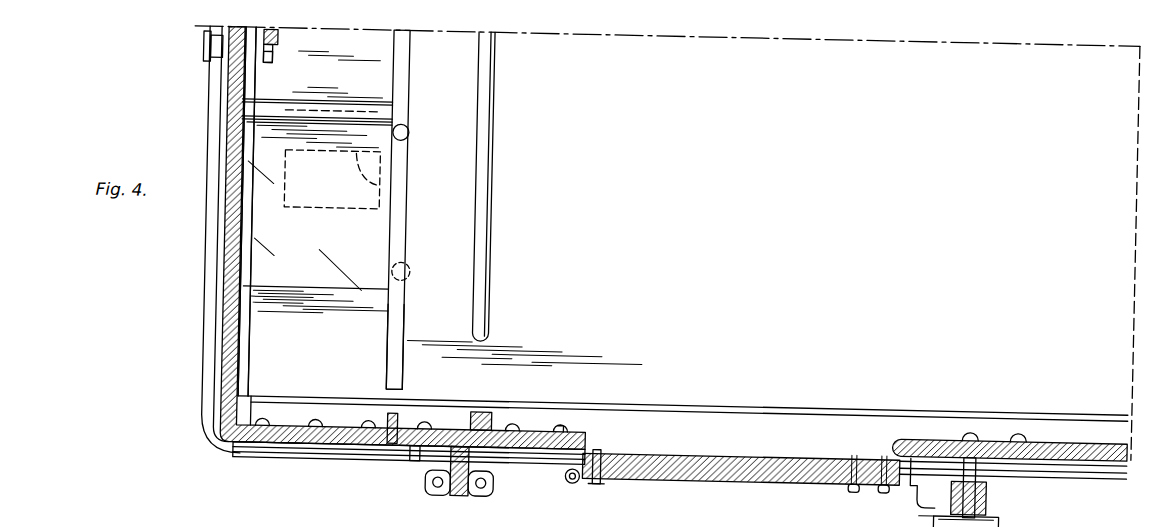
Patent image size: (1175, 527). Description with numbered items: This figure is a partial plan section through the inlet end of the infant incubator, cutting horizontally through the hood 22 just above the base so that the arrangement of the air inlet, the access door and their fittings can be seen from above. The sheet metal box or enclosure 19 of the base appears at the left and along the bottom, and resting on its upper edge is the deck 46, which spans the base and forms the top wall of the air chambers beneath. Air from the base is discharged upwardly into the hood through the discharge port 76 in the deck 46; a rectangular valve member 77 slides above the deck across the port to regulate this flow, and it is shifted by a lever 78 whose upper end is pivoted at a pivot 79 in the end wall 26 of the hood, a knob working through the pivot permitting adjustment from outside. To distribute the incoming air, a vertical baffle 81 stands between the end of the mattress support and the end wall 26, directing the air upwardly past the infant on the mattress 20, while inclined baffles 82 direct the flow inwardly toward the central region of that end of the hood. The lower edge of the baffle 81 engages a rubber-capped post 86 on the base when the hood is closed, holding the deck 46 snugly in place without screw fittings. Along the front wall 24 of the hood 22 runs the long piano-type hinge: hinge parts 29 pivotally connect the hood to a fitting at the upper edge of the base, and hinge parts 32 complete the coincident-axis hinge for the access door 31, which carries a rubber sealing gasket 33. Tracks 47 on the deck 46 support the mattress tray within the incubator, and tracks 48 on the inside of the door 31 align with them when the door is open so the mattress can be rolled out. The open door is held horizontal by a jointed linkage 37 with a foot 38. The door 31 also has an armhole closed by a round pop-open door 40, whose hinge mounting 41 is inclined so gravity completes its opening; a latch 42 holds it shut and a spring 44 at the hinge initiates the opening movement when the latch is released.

The box or enclosure 19 is at (203, 357).
The mattress 20 is at (372, 523).
The hood 22 is at (226, 288).
The front wall 24 is at (278, 435).
The end wall 26 is at (240, 231).
The hinge parts 29 is at (324, 459).
The access door 31 is at (1080, 436).
The hinge parts 32 is at (1018, 442).
The rubber sealing gasket 33 is at (420, 442).
The jointed linkage 37 is at (464, 486).
The foot 38 is at (486, 486).
The pop-open door 40 is at (730, 464).
The hinge mounting 41 is at (600, 461).
The latch 42 is at (921, 484).
The spring 44 is at (576, 475).
The deck 46 is at (1043, 404).
The tracks 47 is at (487, 175).
The tracks 48 is at (481, 406).
The discharge port 76 is at (279, 150).
The valve member 77 is at (402, 177).
The lever 78 is at (260, 62).
The pivot 79 is at (266, 41).
The baffle 81 is at (399, 318).
The baffles 82 is at (317, 277).
The post 86 is at (406, 268).